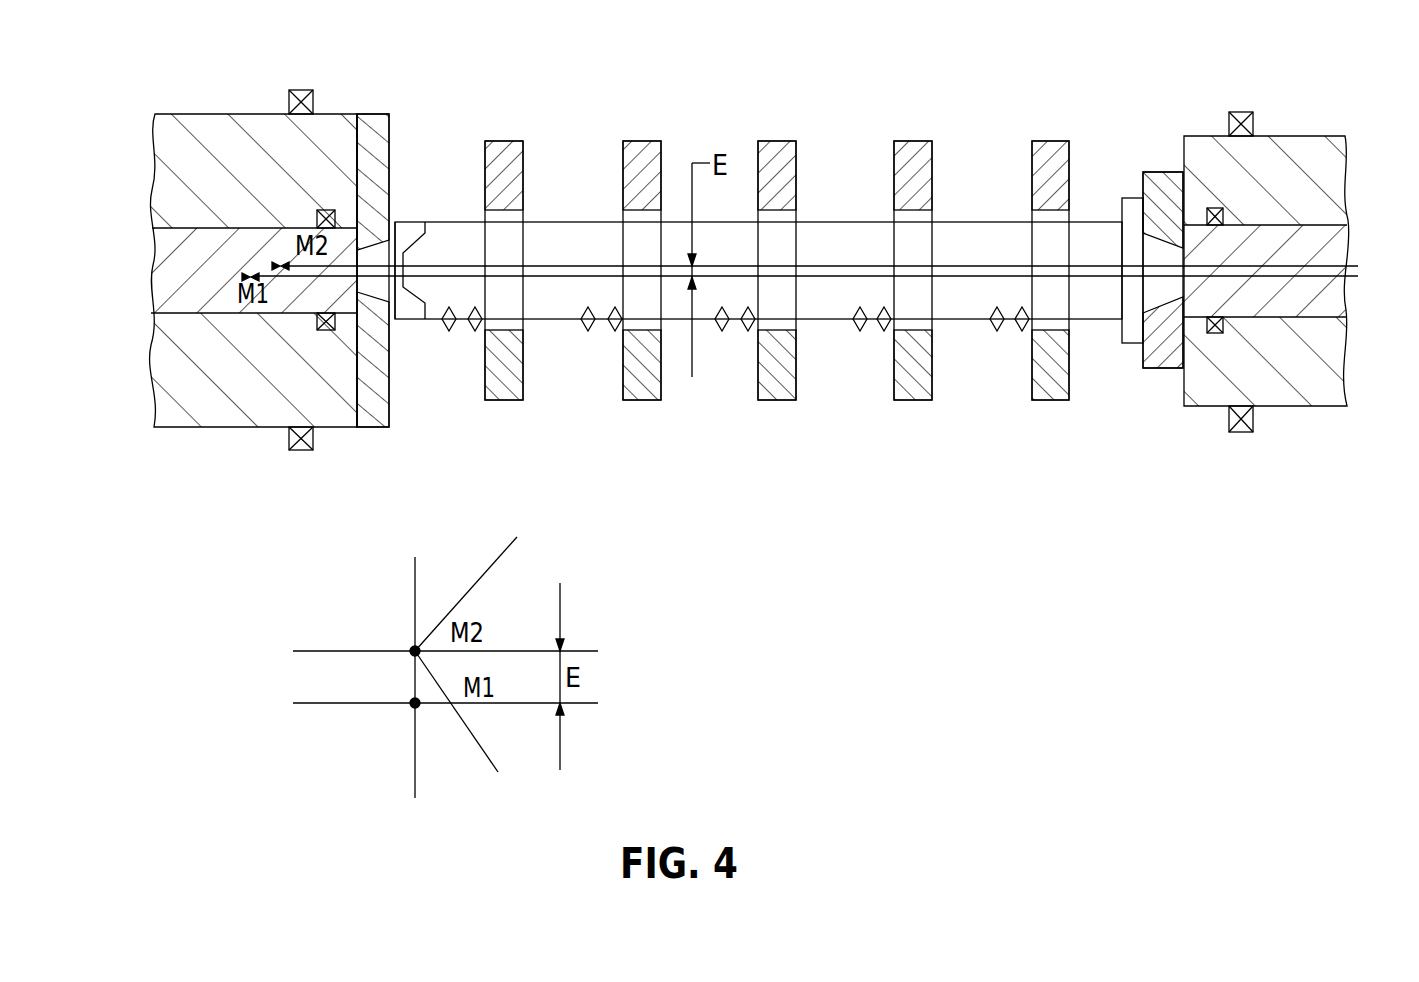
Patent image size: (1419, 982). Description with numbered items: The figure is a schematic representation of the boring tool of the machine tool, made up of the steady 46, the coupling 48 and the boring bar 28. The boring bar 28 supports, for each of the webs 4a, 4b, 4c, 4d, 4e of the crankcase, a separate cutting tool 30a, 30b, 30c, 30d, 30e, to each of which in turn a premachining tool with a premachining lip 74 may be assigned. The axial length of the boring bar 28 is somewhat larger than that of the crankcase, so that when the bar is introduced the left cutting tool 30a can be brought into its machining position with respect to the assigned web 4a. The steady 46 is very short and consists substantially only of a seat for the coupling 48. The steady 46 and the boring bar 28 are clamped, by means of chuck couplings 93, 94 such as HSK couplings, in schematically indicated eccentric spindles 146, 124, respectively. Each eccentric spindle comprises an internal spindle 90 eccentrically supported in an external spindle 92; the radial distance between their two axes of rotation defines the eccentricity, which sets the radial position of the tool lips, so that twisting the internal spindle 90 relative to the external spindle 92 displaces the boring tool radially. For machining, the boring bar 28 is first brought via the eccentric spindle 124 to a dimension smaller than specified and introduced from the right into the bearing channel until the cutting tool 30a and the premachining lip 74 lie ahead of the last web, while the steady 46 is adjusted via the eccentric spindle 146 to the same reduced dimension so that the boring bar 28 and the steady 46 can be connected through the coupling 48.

The web 4a is at (497, 147).
The web 4b is at (634, 147).
The web 4c is at (765, 147).
The web 4d is at (903, 147).
The web 4e is at (1042, 147).
The boring bar 28 is at (962, 240).
The cutting tool 30a is at (475, 332).
The cutting tool 30b is at (615, 332).
The cutting tool 30c is at (748, 332).
The cutting tool 30d is at (884, 332).
The cutting tool 30e is at (1022, 332).
The steady 46 is at (395, 222).
The coupling 48 is at (426, 222).
The premachining lip 74 is at (449, 332).
The internal spindle 90 is at (177, 270).
The external spindle 92 is at (1207, 155).
The chuck coupling 93 is at (376, 254).
The chuck coupling 94 is at (1160, 252).
The eccentric spindle 124 is at (1162, 410).
The eccentric spindle 146 is at (268, 450).